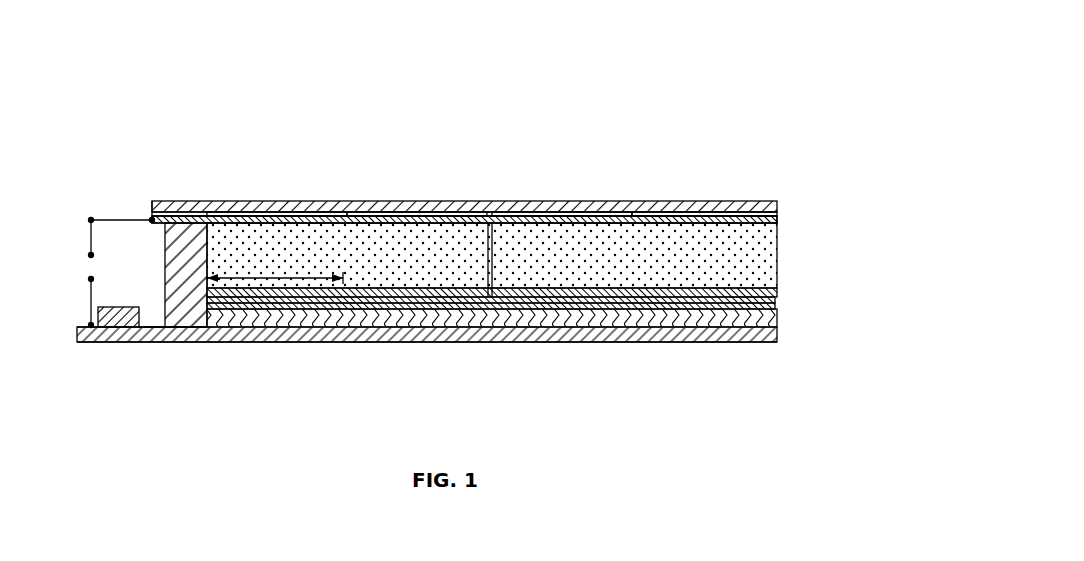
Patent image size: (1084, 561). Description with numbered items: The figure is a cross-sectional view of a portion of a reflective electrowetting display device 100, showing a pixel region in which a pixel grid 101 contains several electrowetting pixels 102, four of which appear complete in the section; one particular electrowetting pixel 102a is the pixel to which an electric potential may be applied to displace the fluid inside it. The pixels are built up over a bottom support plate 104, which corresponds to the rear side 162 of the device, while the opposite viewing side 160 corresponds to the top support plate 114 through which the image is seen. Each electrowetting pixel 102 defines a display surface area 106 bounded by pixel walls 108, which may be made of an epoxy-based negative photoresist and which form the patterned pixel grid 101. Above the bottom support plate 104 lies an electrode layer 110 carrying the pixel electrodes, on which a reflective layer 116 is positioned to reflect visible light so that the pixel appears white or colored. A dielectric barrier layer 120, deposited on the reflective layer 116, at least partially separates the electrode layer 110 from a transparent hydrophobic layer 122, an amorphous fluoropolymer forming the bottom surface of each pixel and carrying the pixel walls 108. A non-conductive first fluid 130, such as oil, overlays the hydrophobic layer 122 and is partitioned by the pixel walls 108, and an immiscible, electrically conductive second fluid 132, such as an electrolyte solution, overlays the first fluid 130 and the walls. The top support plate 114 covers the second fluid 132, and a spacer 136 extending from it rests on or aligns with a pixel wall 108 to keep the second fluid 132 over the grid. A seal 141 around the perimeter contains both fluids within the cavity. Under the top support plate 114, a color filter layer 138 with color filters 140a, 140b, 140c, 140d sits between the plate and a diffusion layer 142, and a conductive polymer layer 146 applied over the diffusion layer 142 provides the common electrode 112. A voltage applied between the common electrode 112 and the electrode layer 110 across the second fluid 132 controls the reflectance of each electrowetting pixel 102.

The reflective electrowetting display device 100 is at (737, 75).
The pixel grid 101 is at (522, 120).
The electrowetting pixel 102 is at (449, 362).
The electrowetting pixel 102a is at (281, 362).
The bottom support plate 104 is at (85, 340).
The display surface area 106 is at (278, 278).
The pixel walls 108 is at (350, 293).
The electrode layer 110 is at (147, 328).
The common electrode 112 is at (779, 217).
The top support plate 114 is at (150, 211).
The reflective layer 116 is at (795, 318).
The dielectric barrier layer 120 is at (776, 306).
The hydrophobic layer 122 is at (776, 299).
The first fluid 130 is at (205, 297).
The second fluid 132 is at (480, 281).
The spacer 136 is at (533, 215).
The color filter layer 138 is at (228, 215).
The color filter 140a is at (316, 212).
The color filter 140b is at (431, 215).
The color filter 140c is at (602, 212).
The color filter 140d is at (686, 212).
The seal 141 is at (178, 252).
The diffusion layer 142 is at (280, 227).
The conductive polymer layer 146 is at (376, 206).
The viewing side 160 is at (404, 137).
The rear side 162 is at (176, 362).